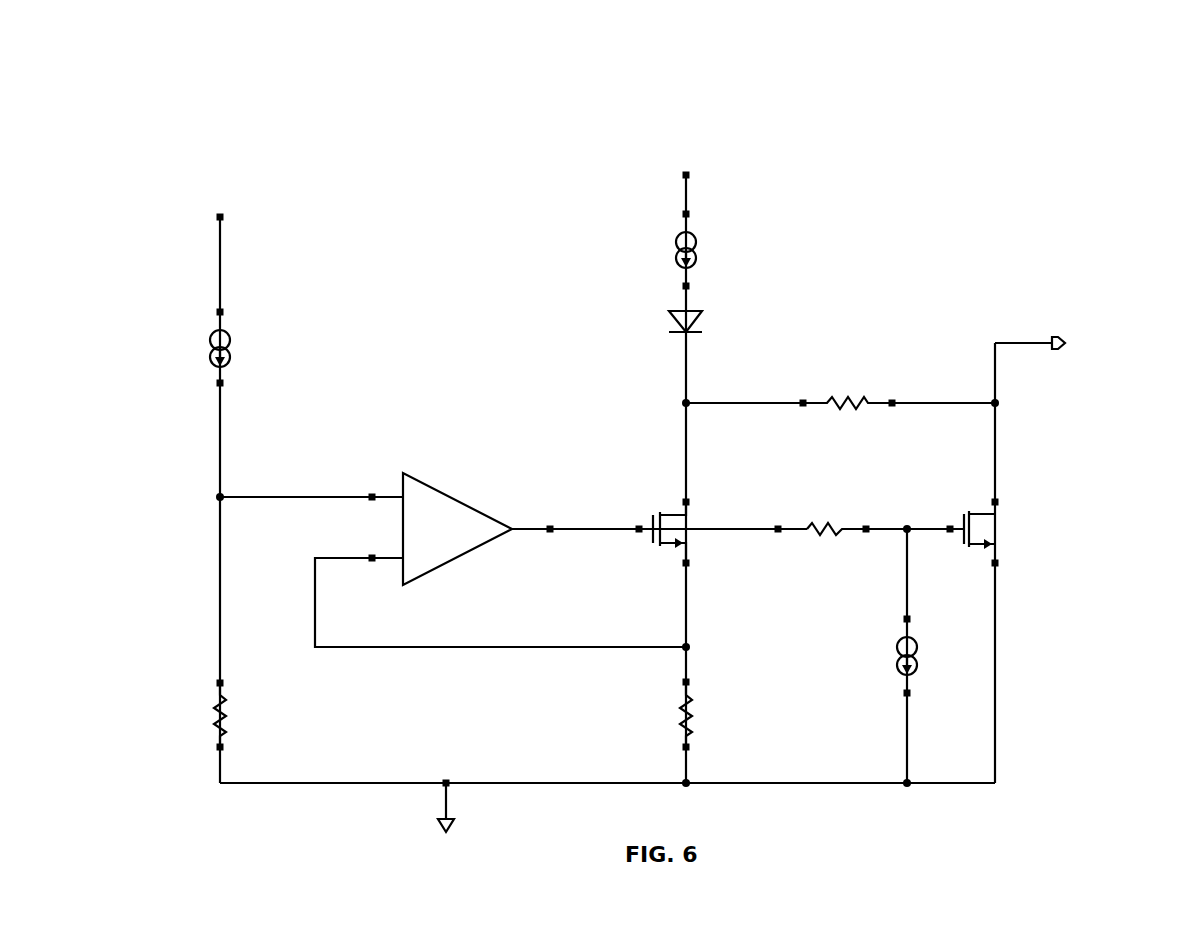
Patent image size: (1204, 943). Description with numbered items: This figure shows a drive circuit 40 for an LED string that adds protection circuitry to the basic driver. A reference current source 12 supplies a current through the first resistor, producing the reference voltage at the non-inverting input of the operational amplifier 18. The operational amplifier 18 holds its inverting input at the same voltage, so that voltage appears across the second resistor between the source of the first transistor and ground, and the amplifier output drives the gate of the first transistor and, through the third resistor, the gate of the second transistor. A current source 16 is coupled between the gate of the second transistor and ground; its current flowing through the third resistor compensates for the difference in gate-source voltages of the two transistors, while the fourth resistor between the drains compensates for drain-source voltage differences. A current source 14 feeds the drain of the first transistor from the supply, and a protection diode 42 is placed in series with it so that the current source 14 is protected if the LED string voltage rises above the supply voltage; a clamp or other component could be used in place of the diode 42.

The drive circuit 40 is at (298, 52).
The reference current source 12 is at (233, 344).
The current source 14 is at (678, 250).
The protection diode 42 is at (678, 322).
The operational amplifier 18 is at (457, 497).
The current source 16 is at (897, 655).